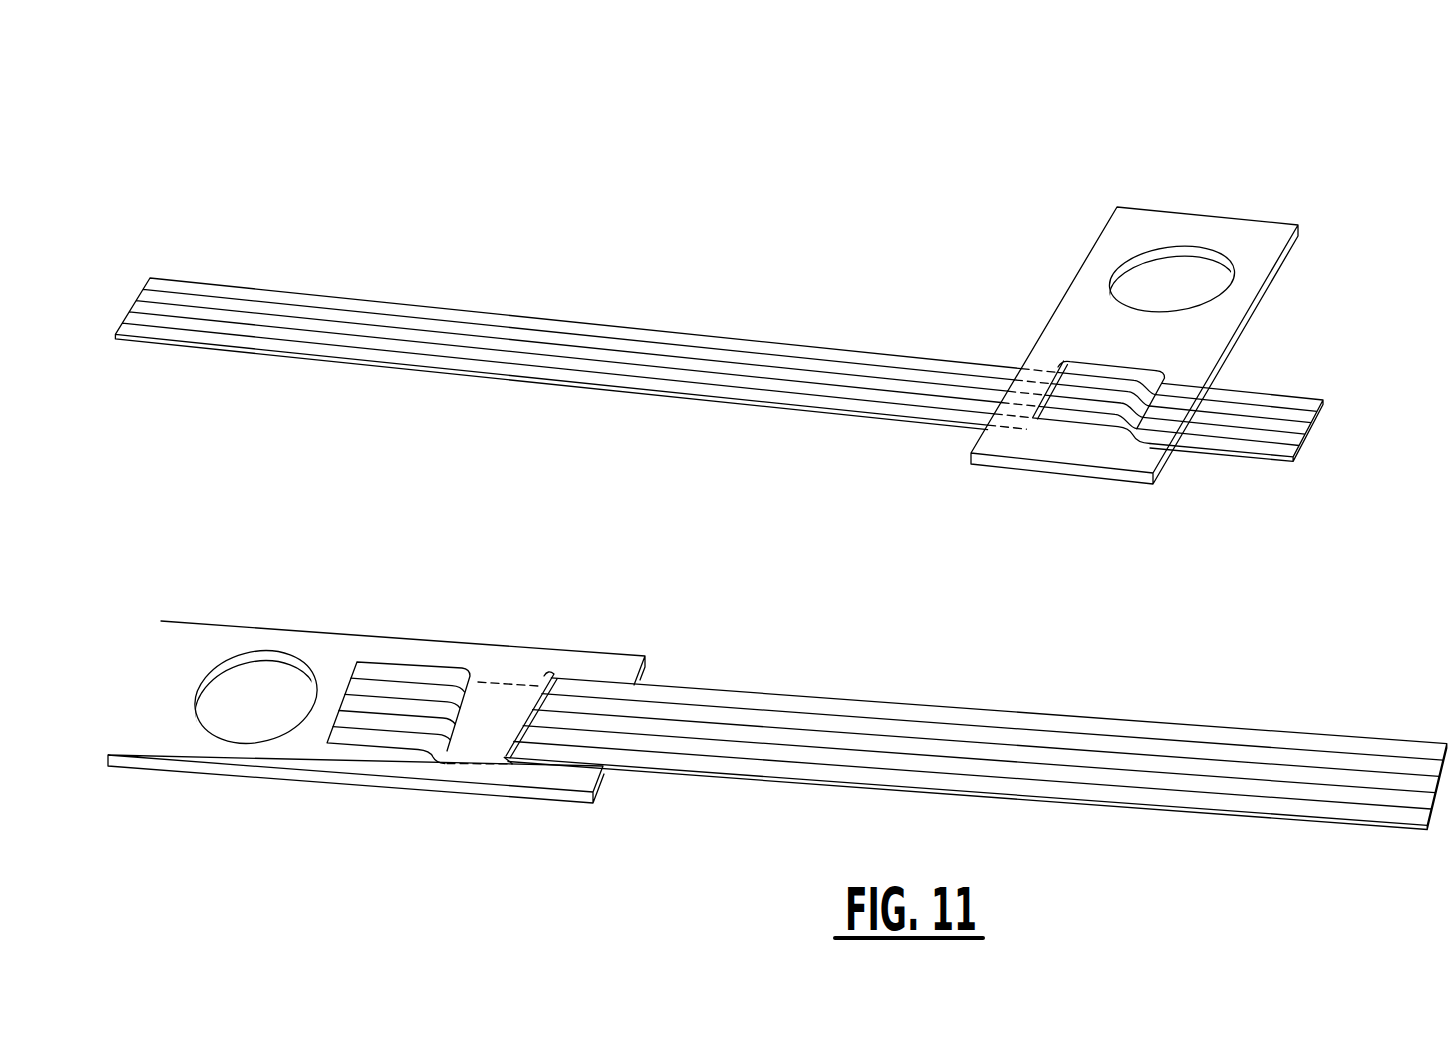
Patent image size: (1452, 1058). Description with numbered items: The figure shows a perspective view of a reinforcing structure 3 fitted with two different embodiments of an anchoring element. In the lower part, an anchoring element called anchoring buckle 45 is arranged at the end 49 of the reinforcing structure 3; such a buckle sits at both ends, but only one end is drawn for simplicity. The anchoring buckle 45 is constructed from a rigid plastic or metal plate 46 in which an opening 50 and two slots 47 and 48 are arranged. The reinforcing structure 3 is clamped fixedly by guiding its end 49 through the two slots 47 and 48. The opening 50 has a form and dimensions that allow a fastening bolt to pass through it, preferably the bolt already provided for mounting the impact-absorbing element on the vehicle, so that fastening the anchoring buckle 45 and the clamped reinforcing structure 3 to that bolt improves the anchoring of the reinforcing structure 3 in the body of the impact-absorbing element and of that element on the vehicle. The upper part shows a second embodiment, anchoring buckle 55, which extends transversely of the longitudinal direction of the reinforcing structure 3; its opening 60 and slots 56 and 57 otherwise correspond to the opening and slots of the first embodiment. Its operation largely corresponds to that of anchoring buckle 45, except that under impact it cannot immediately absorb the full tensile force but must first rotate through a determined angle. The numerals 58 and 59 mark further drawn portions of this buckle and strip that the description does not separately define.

The reinforcing structure 3 is at (713, 352).
The anchoring buckle 45 is at (405, 578).
The plate 46 is at (175, 643).
The slot 47 is at (526, 764).
The slot 48 is at (468, 668).
The end 49 is at (360, 758).
The opening 50 is at (263, 680).
The anchoring buckle 55 is at (1320, 158).
The slot 56 is at (1083, 452).
The slot 57 is at (1066, 370).
The raised tab 58 is at (1168, 372).
The strip end portion 59 is at (1222, 442).
The opening 60 is at (1138, 273).